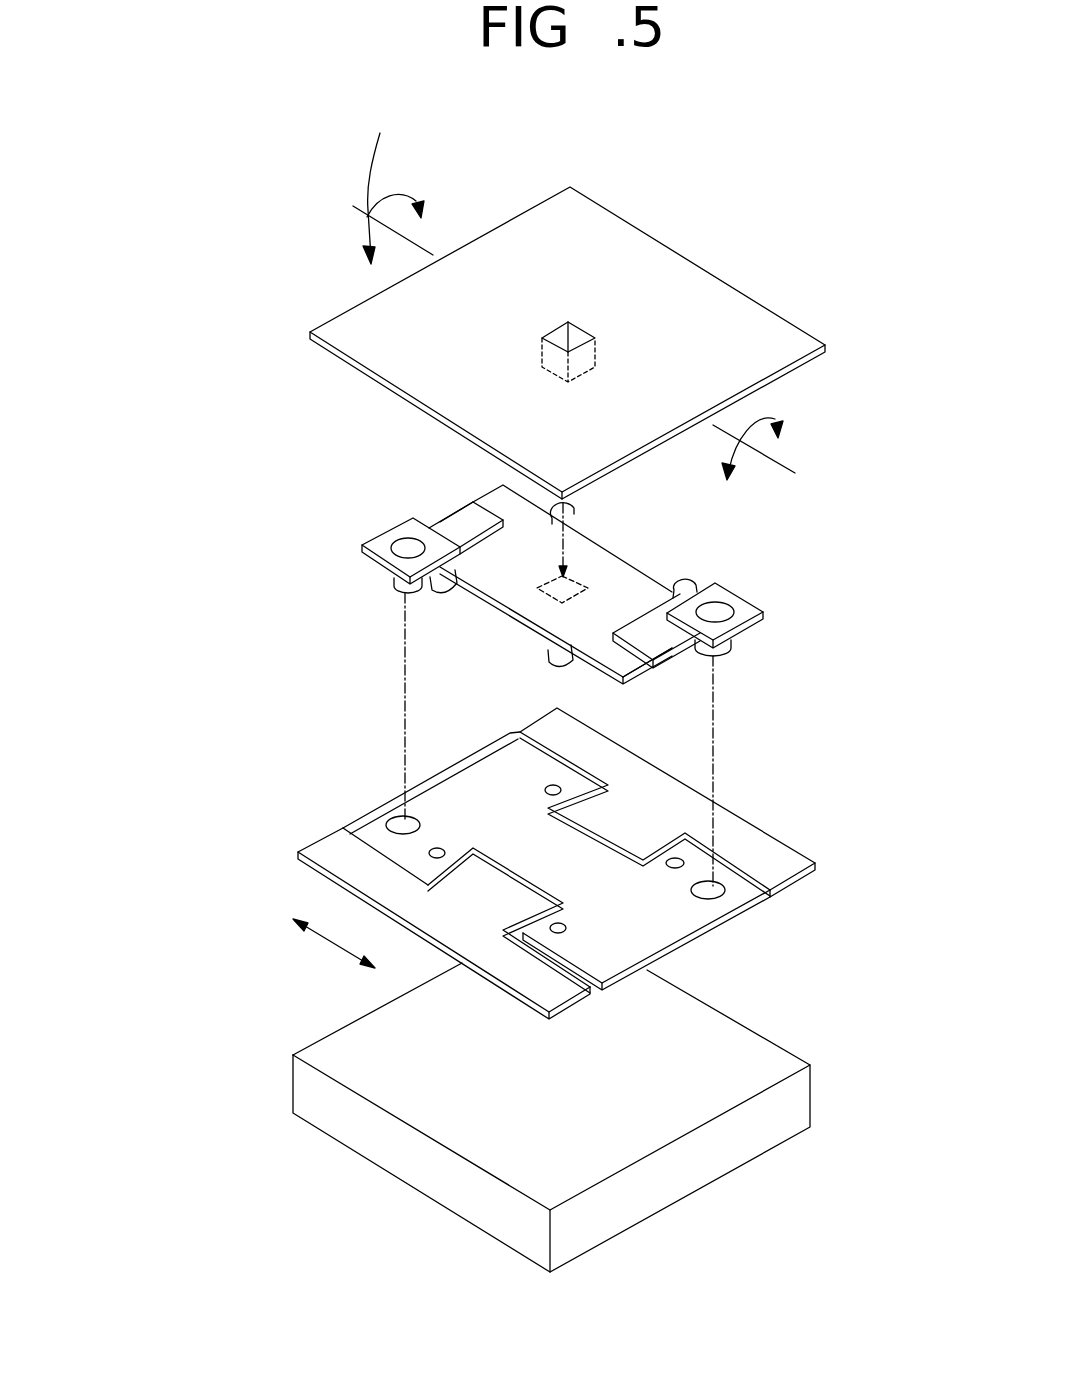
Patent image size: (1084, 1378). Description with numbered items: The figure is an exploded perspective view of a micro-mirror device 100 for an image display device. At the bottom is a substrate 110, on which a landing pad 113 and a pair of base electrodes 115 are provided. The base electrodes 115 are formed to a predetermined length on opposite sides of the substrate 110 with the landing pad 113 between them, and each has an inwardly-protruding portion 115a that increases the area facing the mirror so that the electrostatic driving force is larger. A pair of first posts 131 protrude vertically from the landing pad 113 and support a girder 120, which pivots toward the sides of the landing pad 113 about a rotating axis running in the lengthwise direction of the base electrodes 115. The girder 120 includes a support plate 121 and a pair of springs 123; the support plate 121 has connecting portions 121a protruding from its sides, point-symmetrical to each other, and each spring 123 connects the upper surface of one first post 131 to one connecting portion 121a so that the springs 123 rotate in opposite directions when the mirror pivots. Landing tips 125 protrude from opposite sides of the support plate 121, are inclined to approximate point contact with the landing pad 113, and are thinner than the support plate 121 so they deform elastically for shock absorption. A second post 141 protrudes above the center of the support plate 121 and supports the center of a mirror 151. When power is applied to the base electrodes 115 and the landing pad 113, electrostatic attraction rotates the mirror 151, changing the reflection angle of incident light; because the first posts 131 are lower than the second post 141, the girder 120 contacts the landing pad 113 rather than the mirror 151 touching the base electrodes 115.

The micro-mirror device 100 is at (308, 255).
The substrate 110 is at (360, 1057).
The landing pad 113 is at (447, 795).
The base electrodes 115 is at (350, 862).
The inwardly-protruding portion 115a is at (606, 828).
The girder 120 is at (343, 500).
The support plate 121 is at (630, 583).
The connecting portions 121a is at (488, 495).
The springs 123 is at (455, 525).
The landing tips 125 is at (408, 592).
The first posts 131 is at (400, 578).
The second post 141 is at (577, 367).
The mirror 151 is at (693, 293).